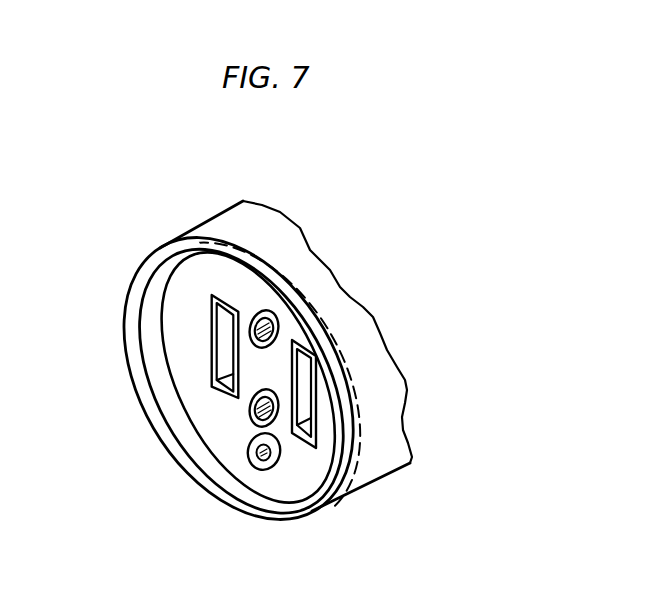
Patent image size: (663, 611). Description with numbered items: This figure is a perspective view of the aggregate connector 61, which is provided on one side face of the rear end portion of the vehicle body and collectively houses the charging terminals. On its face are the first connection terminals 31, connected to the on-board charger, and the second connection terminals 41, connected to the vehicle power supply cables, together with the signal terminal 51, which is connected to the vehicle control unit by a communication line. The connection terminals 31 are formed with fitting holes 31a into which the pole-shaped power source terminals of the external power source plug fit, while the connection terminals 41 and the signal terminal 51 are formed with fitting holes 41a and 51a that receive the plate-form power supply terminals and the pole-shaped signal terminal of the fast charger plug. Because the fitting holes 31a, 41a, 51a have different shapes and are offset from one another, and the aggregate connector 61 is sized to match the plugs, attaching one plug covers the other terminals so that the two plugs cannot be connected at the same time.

The first connection terminal 31 is at (281, 333).
The fitting hole 31a is at (276, 316).
The second connection terminal 41 is at (212, 363).
The fitting hole 41a is at (226, 338).
The signal terminal 51 is at (266, 468).
The fitting hole 51a is at (256, 452).
The aggregate connector 61 is at (250, 516).